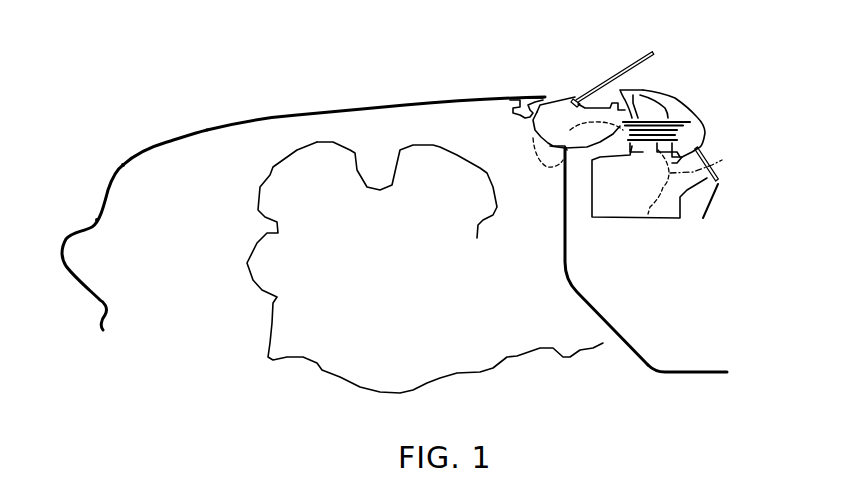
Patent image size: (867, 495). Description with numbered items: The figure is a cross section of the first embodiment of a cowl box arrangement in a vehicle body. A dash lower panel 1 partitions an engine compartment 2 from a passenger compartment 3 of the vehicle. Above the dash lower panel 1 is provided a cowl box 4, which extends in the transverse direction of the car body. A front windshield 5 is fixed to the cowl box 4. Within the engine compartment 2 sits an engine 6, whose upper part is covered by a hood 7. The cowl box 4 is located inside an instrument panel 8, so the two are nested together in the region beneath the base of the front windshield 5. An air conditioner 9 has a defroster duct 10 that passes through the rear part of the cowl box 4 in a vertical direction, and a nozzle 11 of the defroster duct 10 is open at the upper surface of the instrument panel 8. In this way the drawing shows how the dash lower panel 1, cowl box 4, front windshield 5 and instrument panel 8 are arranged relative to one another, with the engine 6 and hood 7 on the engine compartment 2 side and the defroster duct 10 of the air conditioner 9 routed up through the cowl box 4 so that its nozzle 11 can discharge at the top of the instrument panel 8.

The dash lower panel 1 is at (578, 292).
The engine compartment 2 is at (178, 160).
The passenger compartment 3 is at (677, 337).
The cowl box 4 is at (563, 104).
The front windshield 5 is at (610, 77).
The engine 6 is at (330, 142).
The hood 7 is at (405, 104).
The instrument panel 8 is at (690, 112).
The air conditioner 9 is at (683, 212).
The defroster duct 10 is at (657, 103).
The nozzle 11 is at (633, 90).